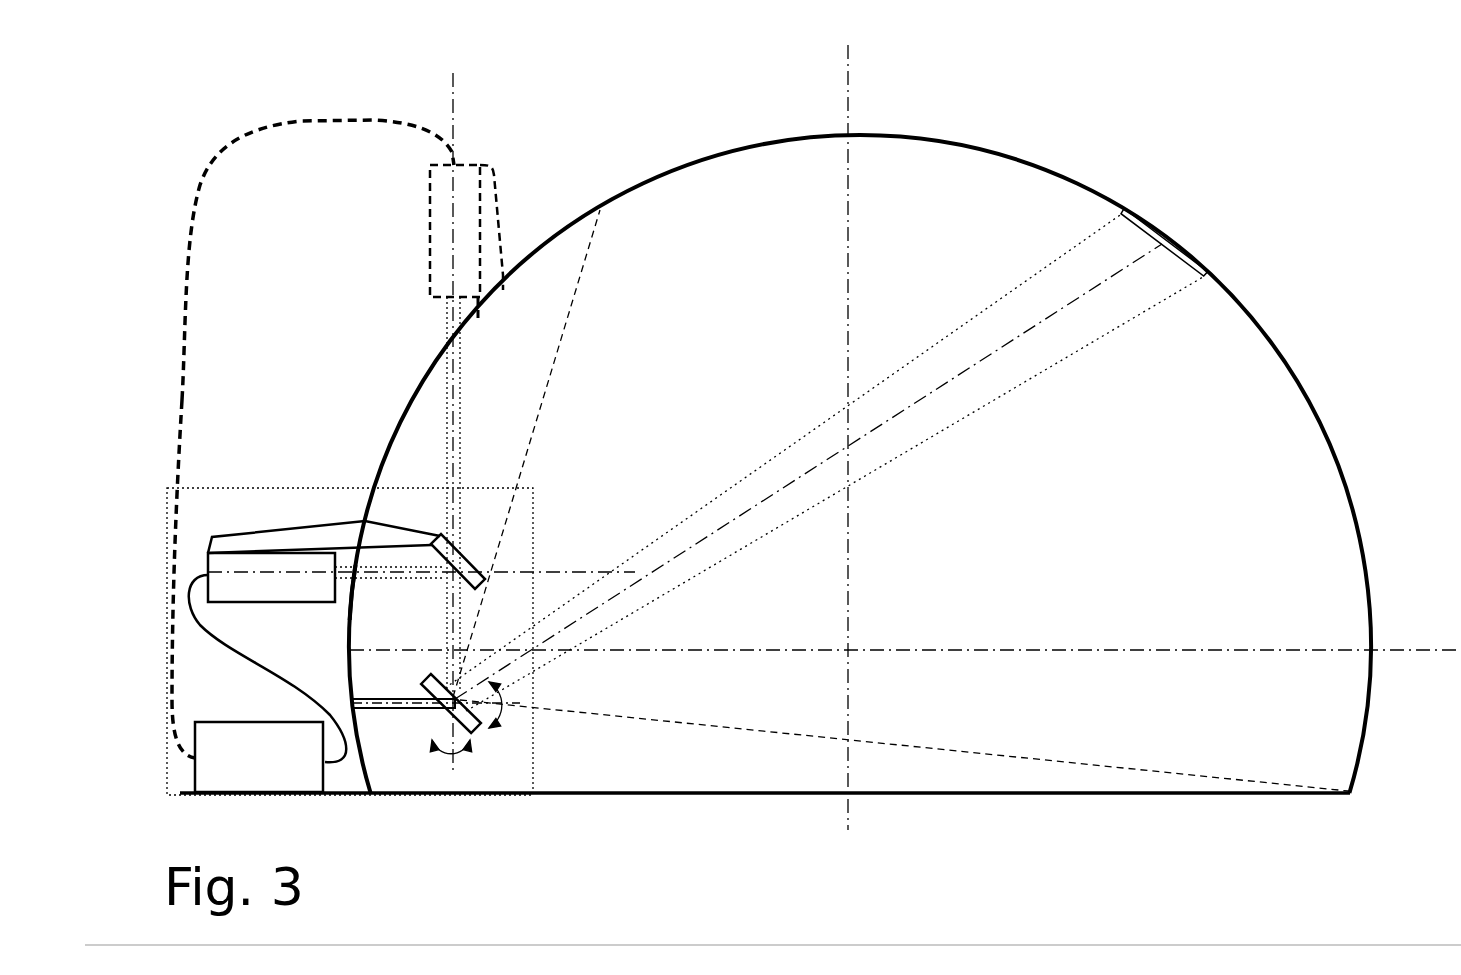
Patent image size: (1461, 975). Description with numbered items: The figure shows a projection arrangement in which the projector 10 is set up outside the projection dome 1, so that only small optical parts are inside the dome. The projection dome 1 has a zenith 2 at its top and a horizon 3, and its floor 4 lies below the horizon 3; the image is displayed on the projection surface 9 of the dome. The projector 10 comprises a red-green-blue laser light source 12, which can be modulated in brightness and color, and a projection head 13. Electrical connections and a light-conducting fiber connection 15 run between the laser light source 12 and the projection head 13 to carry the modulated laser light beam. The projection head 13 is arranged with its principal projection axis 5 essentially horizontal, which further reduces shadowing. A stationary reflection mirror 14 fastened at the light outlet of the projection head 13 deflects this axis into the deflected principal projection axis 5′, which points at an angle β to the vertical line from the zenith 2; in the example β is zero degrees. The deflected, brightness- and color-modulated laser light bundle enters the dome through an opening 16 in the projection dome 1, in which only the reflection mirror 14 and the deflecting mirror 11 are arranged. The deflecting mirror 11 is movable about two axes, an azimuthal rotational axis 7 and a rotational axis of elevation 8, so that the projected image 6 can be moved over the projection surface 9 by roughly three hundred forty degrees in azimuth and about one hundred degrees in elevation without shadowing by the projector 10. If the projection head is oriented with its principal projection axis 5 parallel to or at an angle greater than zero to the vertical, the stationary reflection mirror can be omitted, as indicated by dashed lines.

The projection dome 1 is at (997, 155).
The zenith 2 is at (850, 135).
The horizon 3 is at (1390, 650).
The floor 4 is at (933, 793).
The principal projection axis 5 is at (553, 572).
The deflected principal projection axis 5′ is at (453, 425).
The projected image 6 is at (1185, 265).
The azimuthal rotational axis 7 is at (440, 755).
The rotational axis of elevation 8 is at (503, 718).
The projection surface 9 is at (1030, 178).
The projector 10 is at (203, 487).
The deflecting mirror 11 is at (470, 730).
The red-green-blue laser light source 12 is at (222, 722).
The projection head 13 is at (283, 540).
The stationary reflection mirror 14 is at (465, 552).
The light-conducting fiber connection 15 is at (450, 697).
The opening 16 is at (357, 585).